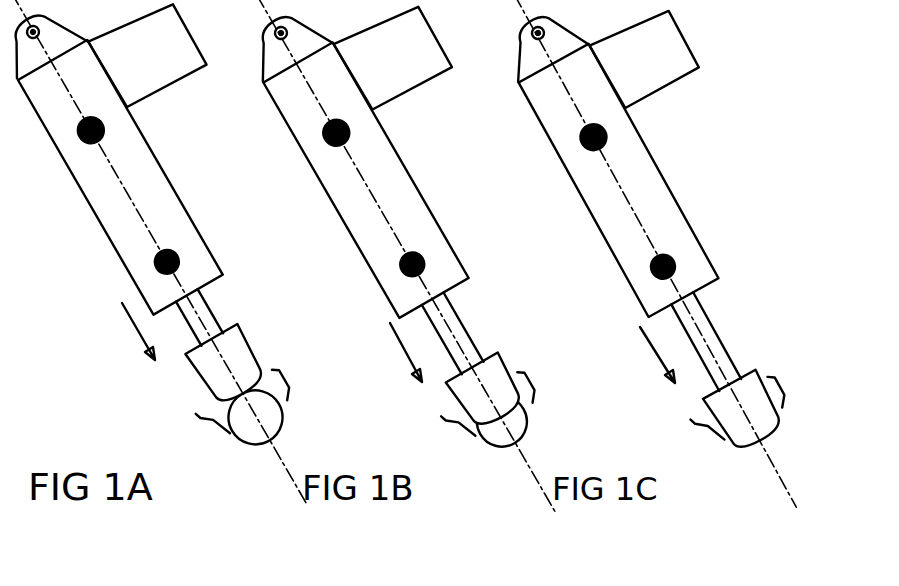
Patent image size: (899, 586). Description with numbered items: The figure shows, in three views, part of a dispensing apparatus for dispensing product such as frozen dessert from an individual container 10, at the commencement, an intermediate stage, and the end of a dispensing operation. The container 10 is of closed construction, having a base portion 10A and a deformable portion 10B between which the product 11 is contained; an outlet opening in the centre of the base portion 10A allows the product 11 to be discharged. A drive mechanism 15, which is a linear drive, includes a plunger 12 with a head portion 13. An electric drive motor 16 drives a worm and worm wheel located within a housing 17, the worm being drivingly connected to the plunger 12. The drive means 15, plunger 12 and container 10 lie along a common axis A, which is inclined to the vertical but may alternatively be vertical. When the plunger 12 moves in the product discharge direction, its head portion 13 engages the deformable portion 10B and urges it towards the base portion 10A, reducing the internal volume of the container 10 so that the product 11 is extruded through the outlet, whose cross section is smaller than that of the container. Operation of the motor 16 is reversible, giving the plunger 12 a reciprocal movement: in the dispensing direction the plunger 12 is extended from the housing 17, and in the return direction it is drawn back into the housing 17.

In FIG. 1A, the container 10 is at (240, 441).
In FIG. 1B, the container 10 is at (533, 444).
In FIG. 1C, the container 10 is at (745, 460).
In FIG. 1A, the base portion 10A is at (285, 423).
In FIG. 1B, the base portion 10A is at (533, 427).
In FIG. 1A, the deformable portion 10B is at (227, 412).
In FIG. 1B, the deformable portion 10B is at (530, 412).
In FIG. 1A, the product 11 is at (256, 417).
In FIG. 1B, the product 11 is at (502, 421).
In FIG. 1A, the plunger 12 is at (253, 313).
In FIG. 1B, the plunger 12 is at (515, 313).
In FIG. 1C, the plunger 12 is at (728, 315).
In FIG. 1A, the head portion 13 is at (248, 353).
In FIG. 1B, the head portion 13 is at (508, 362).
In FIG. 1C, the head portion 13 is at (723, 415).
In FIG. 1A, the drive mechanism 15 is at (175, 177).
In FIG. 1B, the drive mechanism 15 is at (403, 180).
In FIG. 1C, the drive mechanism 15 is at (652, 180).
In FIG. 1A, the electric drive motor 16 is at (148, 88).
In FIG. 1B, the electric drive motor 16 is at (415, 83).
In FIG. 1C, the electric drive motor 16 is at (660, 93).
In FIG. 1A, the housing 17 is at (163, 185).
In FIG. 1B, the housing 17 is at (402, 167).
In FIG. 1C, the housing 17 is at (650, 152).
In FIG. 1A, the axis A is at (128, 200).
In FIG. 1B, the axis A is at (357, 180).
In FIG. 1C, the axis A is at (607, 163).